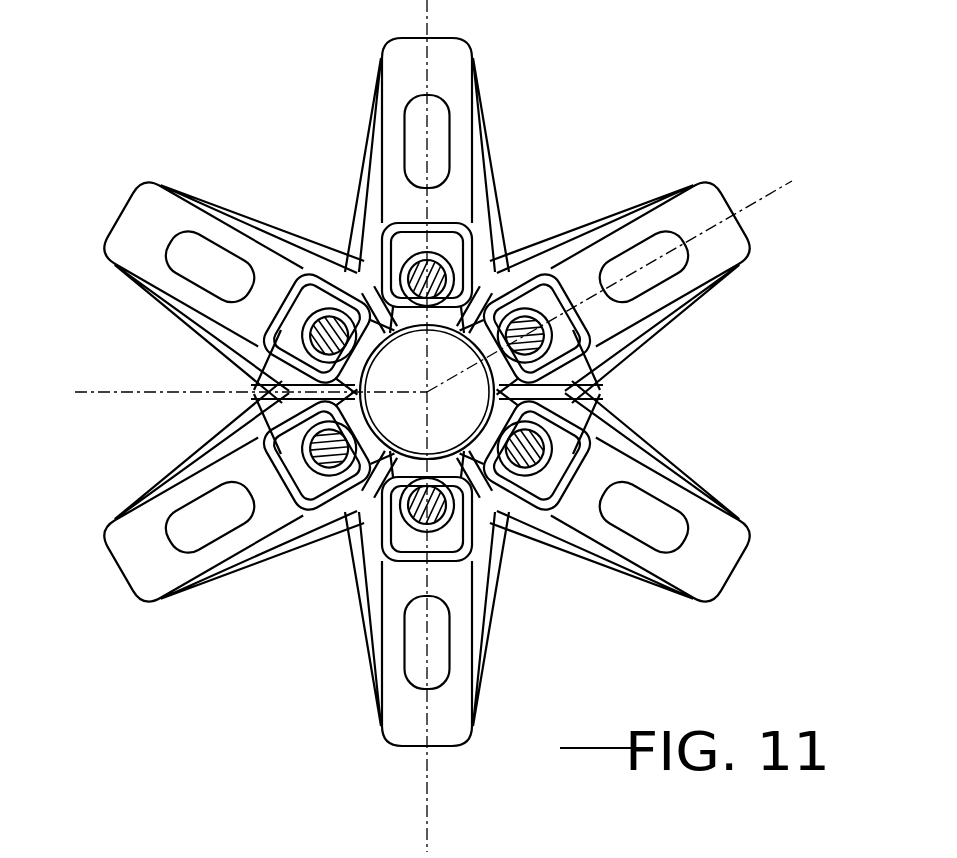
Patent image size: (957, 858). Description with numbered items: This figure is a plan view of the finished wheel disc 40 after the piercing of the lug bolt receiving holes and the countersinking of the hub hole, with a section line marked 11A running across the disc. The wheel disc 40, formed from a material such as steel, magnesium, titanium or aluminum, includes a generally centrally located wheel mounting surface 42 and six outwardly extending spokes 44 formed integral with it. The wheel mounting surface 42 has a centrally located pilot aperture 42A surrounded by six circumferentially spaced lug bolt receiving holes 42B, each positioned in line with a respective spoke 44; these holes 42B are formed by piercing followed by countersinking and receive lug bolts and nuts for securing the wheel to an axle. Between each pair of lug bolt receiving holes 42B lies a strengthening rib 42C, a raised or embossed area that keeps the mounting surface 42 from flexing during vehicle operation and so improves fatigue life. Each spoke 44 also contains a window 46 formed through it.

The wheel disc 40 is at (436, 426).
The wheel mounting surface 42 is at (438, 388).
The pilot aperture 42A is at (393, 352).
The lug bolt receiving holes 42B is at (354, 333).
The strengthening ribs 42C is at (350, 290).
The spokes 44 is at (486, 56).
The windows 46 is at (447, 153).
The section line 11A is at (788, 172).